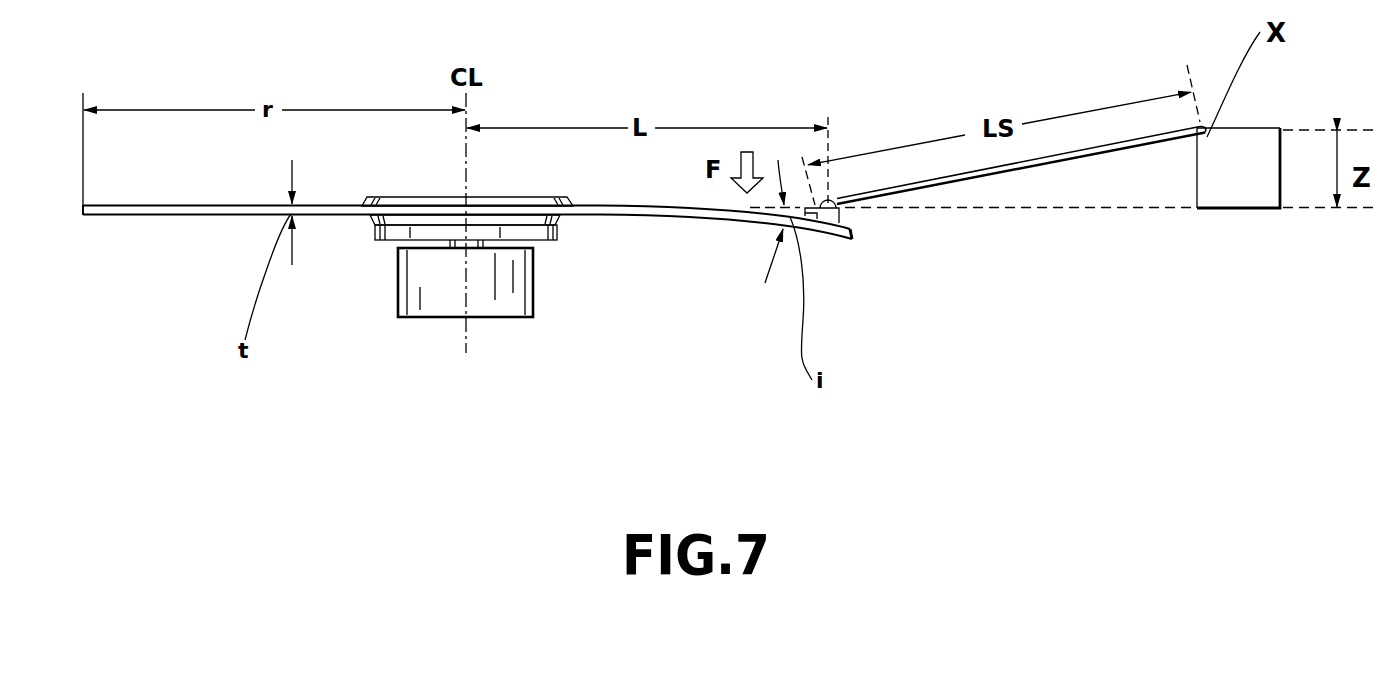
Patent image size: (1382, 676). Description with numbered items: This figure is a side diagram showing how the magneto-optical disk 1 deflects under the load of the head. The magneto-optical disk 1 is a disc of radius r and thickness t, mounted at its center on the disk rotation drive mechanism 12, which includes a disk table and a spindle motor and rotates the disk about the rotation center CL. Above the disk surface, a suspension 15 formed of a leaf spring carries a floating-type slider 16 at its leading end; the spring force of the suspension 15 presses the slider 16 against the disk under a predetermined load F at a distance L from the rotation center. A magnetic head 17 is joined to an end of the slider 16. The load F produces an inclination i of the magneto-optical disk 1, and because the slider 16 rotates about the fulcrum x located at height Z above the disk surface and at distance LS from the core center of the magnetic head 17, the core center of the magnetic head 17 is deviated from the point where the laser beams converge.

The magneto-optical disk 1 is at (182, 219).
The disk rotation drive mechanism 12 is at (511, 300).
The suspension 15 is at (1075, 162).
The slider 16 is at (852, 213).
The magnetic head 17 is at (868, 283).